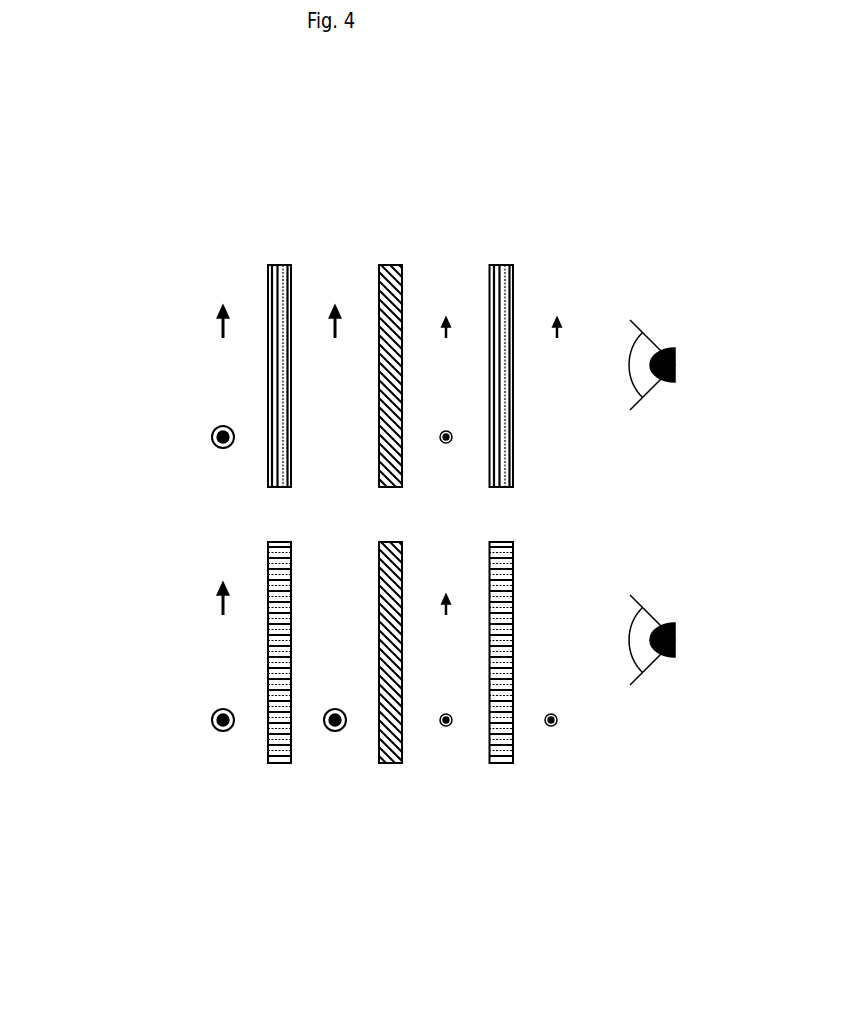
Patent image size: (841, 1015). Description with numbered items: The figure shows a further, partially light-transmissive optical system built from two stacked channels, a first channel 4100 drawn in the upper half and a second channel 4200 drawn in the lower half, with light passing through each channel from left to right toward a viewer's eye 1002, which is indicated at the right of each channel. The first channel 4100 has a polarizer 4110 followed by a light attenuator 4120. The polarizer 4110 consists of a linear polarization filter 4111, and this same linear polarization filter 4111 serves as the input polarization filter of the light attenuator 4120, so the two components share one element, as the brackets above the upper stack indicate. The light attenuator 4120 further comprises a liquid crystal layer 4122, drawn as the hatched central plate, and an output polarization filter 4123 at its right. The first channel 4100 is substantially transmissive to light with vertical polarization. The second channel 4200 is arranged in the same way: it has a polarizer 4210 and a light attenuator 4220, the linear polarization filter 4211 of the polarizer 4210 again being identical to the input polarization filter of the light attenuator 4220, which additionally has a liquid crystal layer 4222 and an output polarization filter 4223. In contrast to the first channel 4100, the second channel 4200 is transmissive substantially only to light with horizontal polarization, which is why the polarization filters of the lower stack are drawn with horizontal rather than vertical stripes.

The viewer eye 1002 is at (675, 366).
The first channel 4100 is at (301, 281).
The polarizer 4110 is at (312, 163).
The linear polarization filter 4111 is at (278, 264).
The light attenuator 4120 is at (262, 192).
The liquid crystal layer 4122 is at (390, 264).
The output polarization filter 4123 is at (500, 264).
The second channel 4200 is at (301, 744).
The polarizer 4210 is at (312, 855).
The linear polarization filter 4211 is at (278, 764).
The light attenuator 4220 is at (262, 827).
The liquid crystal layer 4222 is at (390, 764).
The output polarization filter 4223 is at (500, 764).